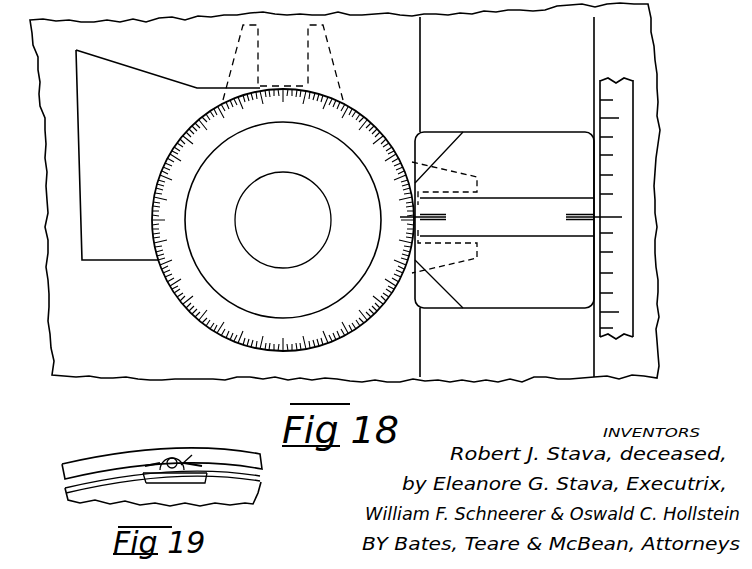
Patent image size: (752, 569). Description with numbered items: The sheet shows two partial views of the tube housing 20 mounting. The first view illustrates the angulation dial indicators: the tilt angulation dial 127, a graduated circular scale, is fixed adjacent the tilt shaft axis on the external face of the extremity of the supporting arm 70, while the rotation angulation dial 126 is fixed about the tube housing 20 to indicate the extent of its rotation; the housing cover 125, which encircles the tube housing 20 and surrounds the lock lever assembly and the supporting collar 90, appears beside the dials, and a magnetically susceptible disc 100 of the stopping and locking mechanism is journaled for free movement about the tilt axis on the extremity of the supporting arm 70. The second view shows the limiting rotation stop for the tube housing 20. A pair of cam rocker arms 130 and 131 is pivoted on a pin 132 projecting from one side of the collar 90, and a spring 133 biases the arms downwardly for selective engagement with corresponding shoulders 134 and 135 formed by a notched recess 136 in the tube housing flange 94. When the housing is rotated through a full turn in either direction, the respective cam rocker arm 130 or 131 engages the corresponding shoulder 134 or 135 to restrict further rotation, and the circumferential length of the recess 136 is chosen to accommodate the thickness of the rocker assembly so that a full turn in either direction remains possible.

In FIG. 18, the tube housing 20 is at (150, 350).
In FIG. 19, the tube housing 20 is at (82, 502).
In FIG. 18, the supporting arm 70 is at (135, 85).
In FIG. 18, the tilt angulation dial 127 is at (338, 336).
In FIG. 18, the housing cover 125 is at (592, 39).
In FIG. 18, the magnetically susceptible disc 100 is at (411, 280).
In FIG. 18, the rotation angulation dial 126 is at (633, 140).
In FIG. 19, the supporting collar 90 is at (84, 465).
In FIG. 19, the tube housing flange 94 is at (65, 488).
In FIG. 19, the cam rocker arm 130 is at (158, 455).
In FIG. 19, the cam rocker arm 131 is at (188, 453).
In FIG. 19, the pin 132 is at (173, 456).
In FIG. 19, the spring 133 is at (198, 458).
In FIG. 19, the shoulder 134 is at (142, 479).
In FIG. 19, the shoulder 135 is at (202, 479).
In FIG. 19, the notched recess 136 is at (172, 479).